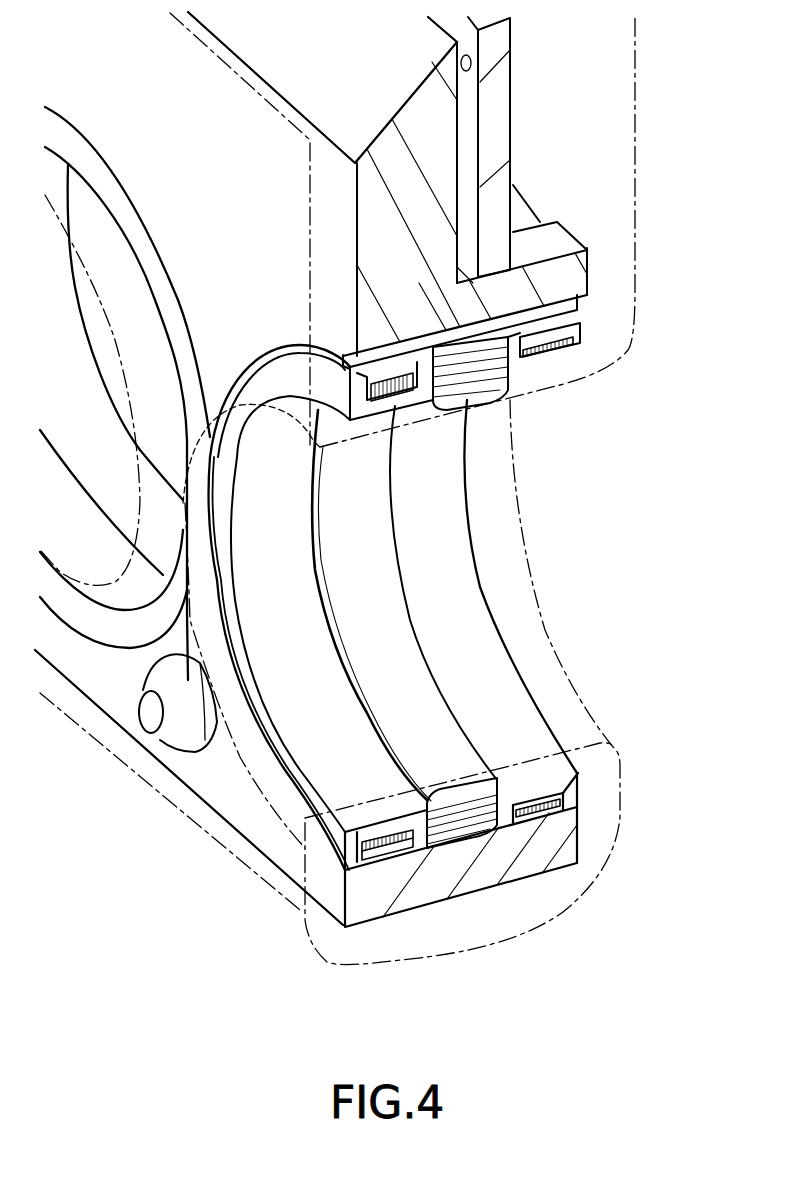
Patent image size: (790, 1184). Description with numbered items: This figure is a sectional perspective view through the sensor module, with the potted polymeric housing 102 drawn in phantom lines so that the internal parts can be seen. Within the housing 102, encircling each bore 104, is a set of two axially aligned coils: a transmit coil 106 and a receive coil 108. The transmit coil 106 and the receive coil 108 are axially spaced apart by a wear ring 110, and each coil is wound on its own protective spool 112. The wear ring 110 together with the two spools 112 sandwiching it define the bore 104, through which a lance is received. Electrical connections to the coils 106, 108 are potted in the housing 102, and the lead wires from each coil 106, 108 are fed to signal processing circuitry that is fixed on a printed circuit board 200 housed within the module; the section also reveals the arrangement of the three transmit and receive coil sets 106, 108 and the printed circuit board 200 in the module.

The potted polymeric housing 102 is at (620, 815).
The bore 104 is at (583, 622).
The transmit coil 106 is at (382, 848).
The receive coil 108 is at (560, 795).
The wear ring 110 is at (460, 762).
The protective spool 112 is at (473, 625).
The printed circuit board 200 is at (522, 101).